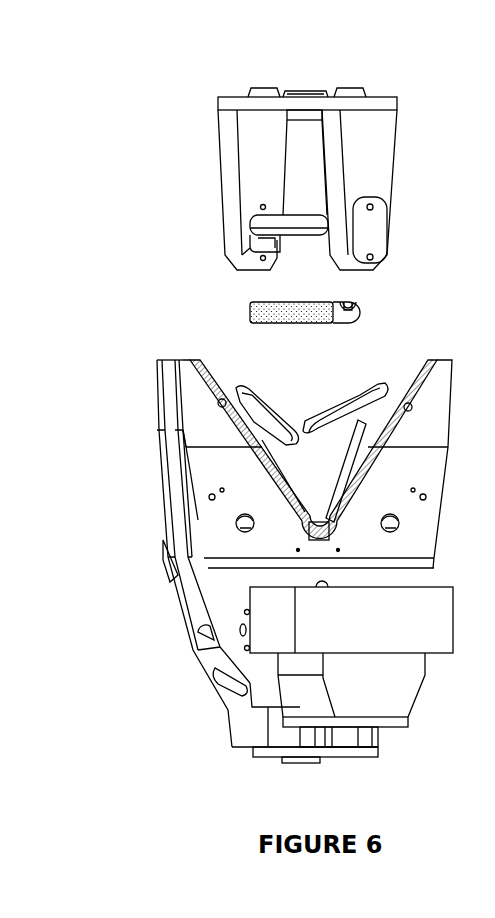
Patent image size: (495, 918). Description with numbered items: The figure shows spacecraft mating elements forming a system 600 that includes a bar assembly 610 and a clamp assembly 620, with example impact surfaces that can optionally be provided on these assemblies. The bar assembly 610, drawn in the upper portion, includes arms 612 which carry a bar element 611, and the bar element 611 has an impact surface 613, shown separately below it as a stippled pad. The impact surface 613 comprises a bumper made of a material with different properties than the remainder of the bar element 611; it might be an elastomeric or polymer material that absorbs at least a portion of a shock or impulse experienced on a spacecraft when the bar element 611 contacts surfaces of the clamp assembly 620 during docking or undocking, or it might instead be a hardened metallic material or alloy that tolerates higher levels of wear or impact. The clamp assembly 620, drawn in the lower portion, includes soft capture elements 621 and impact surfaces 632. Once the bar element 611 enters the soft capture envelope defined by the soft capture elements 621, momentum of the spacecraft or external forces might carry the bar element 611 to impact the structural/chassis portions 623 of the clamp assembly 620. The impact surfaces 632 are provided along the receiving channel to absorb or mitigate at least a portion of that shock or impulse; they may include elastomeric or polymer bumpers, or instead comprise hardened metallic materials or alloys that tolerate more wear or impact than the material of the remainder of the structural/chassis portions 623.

The system 600 is at (118, 92).
The bar assembly 610 is at (216, 125).
The bar element 611 is at (308, 238).
The arms 612 is at (224, 175).
The impact surface 613 is at (256, 312).
The clamp assembly 620 is at (163, 576).
The soft capture elements 621 is at (321, 410).
The structural/chassis portions 623 is at (186, 471).
The impact surfaces 632 is at (325, 492).